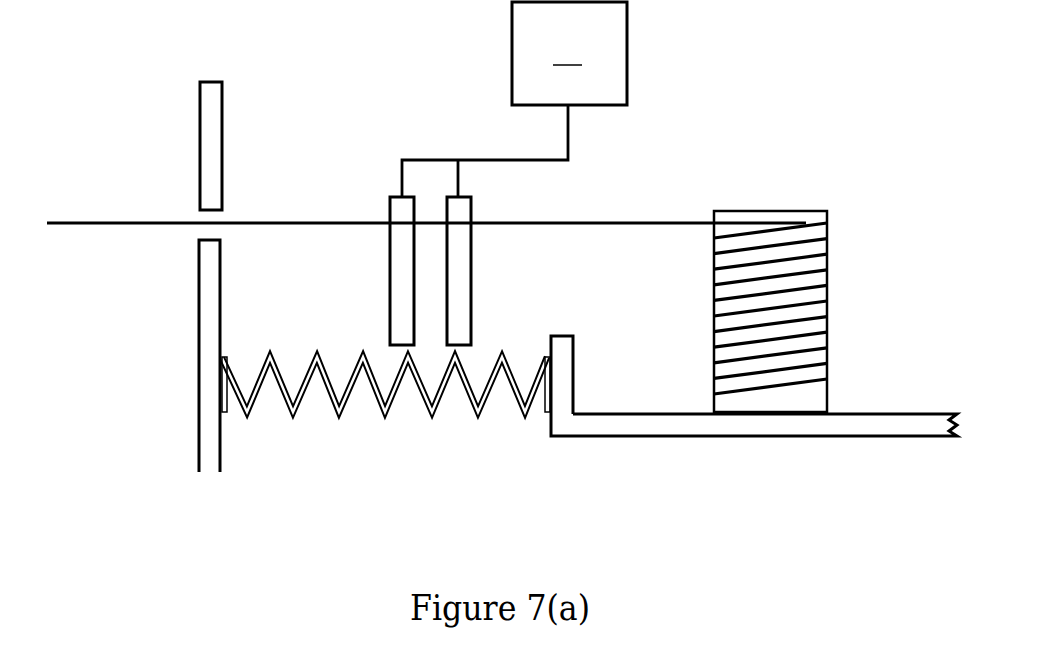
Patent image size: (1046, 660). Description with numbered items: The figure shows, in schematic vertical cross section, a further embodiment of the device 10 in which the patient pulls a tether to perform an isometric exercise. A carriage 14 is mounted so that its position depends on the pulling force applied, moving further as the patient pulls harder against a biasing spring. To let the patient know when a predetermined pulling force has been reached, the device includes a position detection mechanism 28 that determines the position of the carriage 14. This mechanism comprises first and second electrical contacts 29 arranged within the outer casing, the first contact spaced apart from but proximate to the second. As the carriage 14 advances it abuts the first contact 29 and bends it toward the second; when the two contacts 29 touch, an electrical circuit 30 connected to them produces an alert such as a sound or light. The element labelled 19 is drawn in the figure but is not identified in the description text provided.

The device 10 is at (160, 123).
The carriage 14 is at (873, 428).
The coil actuator 19 is at (812, 266).
The position detection mechanism 28 is at (431, 178).
The electrical contacts 29 is at (402, 284).
The electrical circuit 30 is at (569, 53).